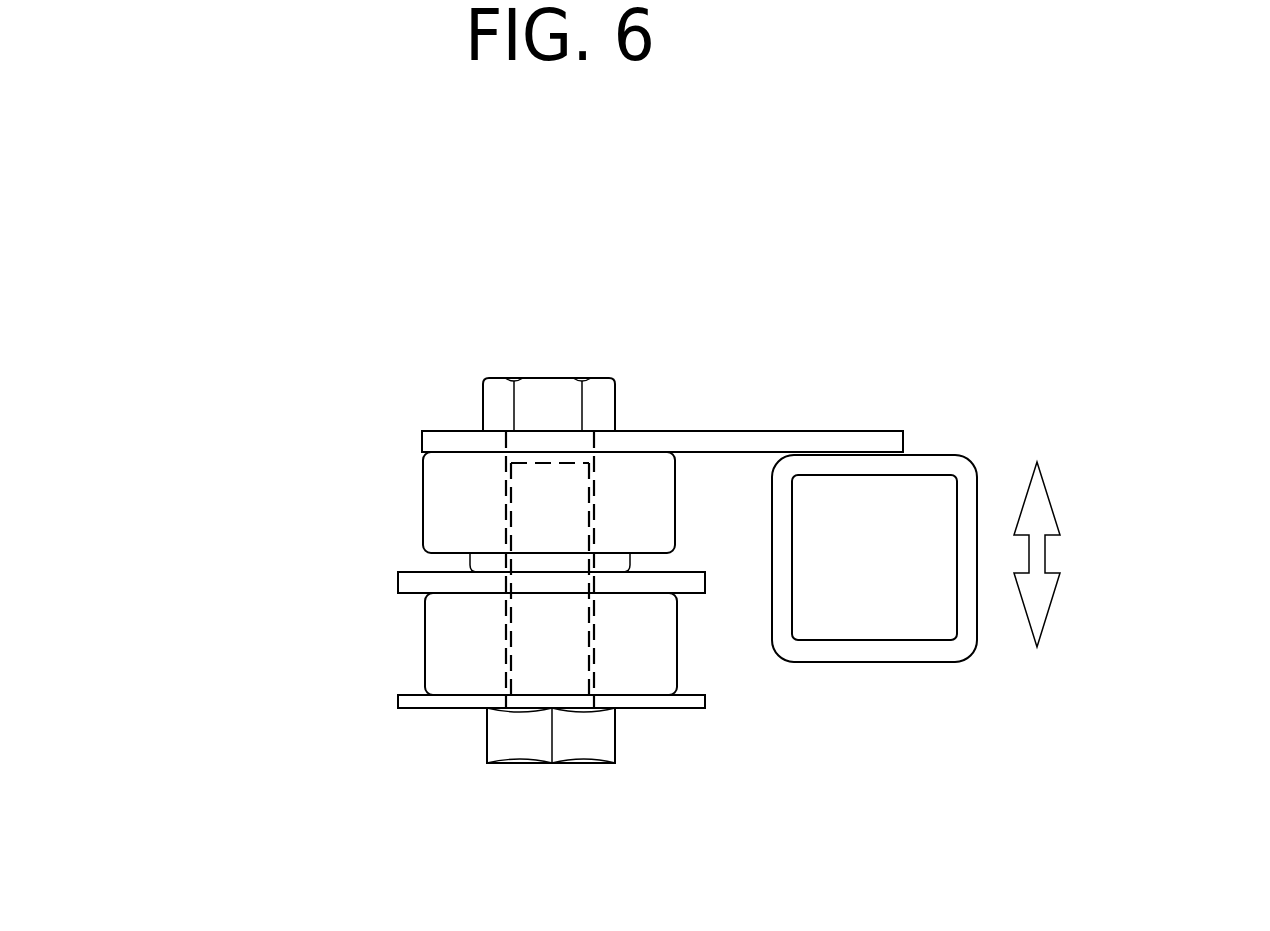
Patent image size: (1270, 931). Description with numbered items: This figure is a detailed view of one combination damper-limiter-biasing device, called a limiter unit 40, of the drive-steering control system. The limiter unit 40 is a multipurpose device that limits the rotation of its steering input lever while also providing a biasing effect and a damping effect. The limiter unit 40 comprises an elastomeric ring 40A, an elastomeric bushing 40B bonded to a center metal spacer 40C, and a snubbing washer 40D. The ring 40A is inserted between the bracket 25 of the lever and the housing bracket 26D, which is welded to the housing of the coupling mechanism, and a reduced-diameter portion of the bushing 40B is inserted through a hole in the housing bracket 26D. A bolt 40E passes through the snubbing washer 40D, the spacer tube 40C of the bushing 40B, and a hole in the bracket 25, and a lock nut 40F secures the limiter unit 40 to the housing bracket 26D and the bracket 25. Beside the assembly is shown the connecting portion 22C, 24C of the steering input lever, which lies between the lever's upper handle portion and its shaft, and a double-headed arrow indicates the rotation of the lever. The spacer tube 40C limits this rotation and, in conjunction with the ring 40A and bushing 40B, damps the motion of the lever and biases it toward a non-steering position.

The limiter unit 40 is at (288, 433).
The elastomeric ring 40A is at (423, 487).
The elastomeric bushing 40B is at (470, 673).
The center metal spacer 40C is at (570, 502).
The snubbing washer 40D is at (707, 700).
The bolt 40E is at (603, 772).
The lock nut 40F is at (543, 390).
The bracket 25 is at (735, 426).
The housing bracket 26D is at (408, 582).
The connecting portion 22C is at (953, 648).
The connecting portion 24C is at (874, 558).